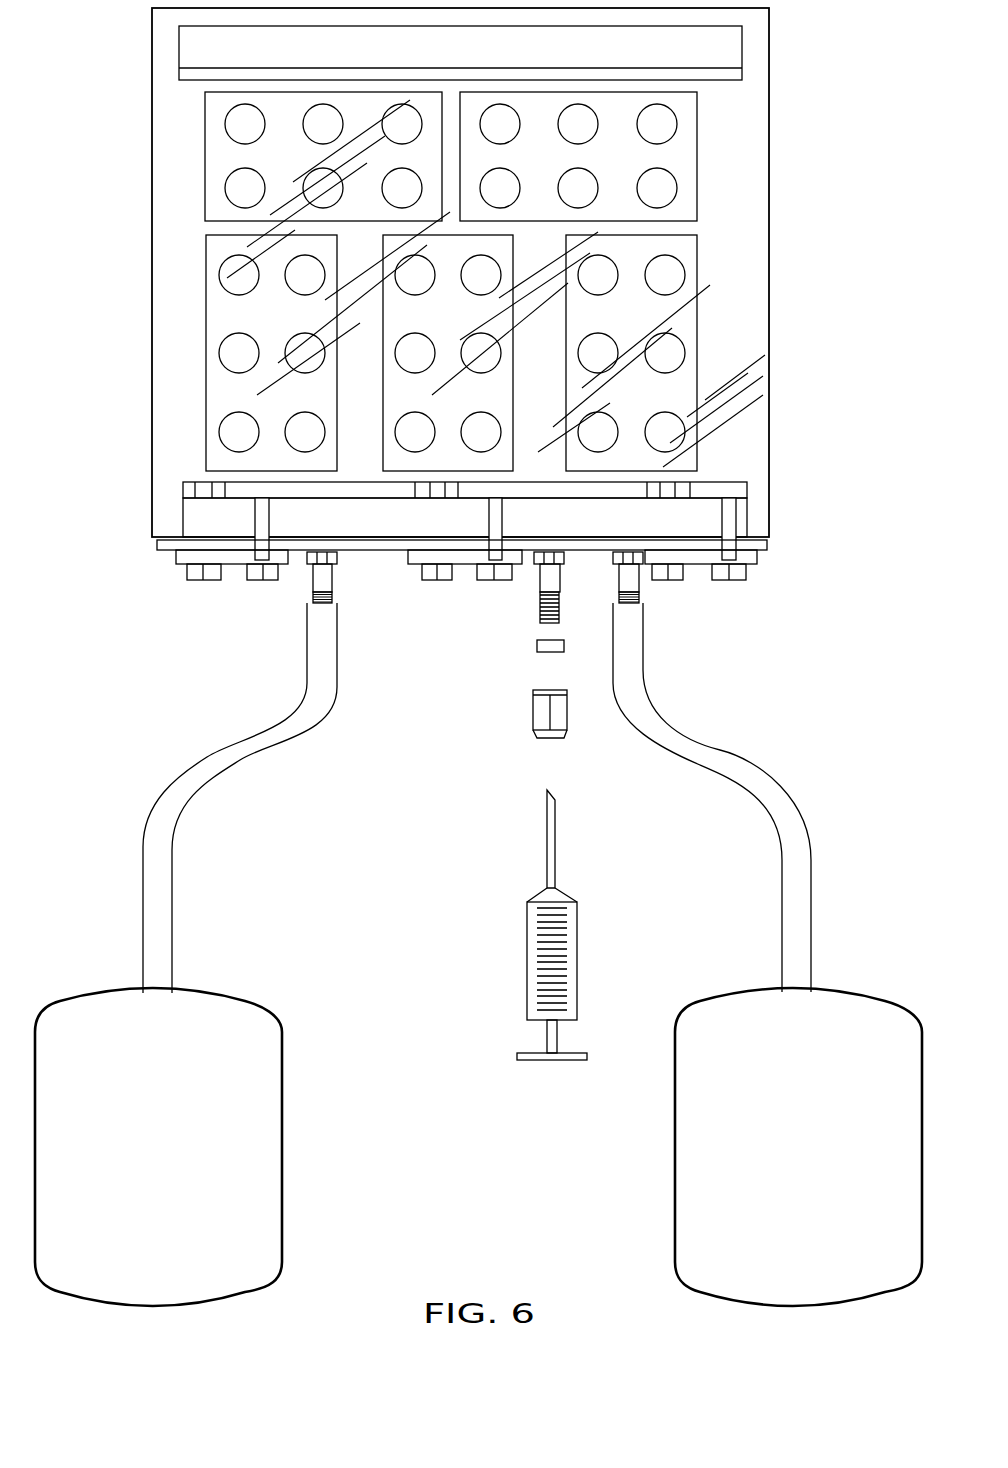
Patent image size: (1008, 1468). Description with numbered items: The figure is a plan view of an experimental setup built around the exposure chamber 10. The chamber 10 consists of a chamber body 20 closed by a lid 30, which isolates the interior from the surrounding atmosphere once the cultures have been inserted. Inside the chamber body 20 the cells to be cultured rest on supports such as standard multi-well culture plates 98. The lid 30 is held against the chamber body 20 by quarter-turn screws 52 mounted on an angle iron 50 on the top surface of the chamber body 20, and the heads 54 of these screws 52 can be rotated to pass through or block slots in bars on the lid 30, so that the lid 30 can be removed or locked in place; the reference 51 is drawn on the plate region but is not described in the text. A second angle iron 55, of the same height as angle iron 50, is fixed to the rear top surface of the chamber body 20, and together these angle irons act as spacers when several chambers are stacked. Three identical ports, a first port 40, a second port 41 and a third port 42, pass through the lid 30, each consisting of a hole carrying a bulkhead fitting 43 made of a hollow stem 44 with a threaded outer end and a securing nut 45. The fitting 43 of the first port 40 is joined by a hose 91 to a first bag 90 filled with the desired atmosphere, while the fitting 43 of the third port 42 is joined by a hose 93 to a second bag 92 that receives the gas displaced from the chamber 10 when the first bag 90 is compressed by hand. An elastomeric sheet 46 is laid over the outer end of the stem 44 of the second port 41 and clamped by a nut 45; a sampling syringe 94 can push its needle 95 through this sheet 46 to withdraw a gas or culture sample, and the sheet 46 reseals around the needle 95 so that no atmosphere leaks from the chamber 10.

The exposure chamber 10 is at (494, 395).
The chamber body 20 is at (768, 163).
The lid 30 is at (768, 542).
The first port 40 is at (345, 579).
The second port 41 is at (578, 591).
The third port 42 is at (660, 593).
The bulkhead fitting 43 is at (500, 686).
The hollow stem 44 is at (313, 585).
The securing nut 45 is at (527, 736).
The elastomeric sheet 46 is at (537, 645).
The angle iron 50 is at (474, 492).
The port 51 is at (207, 492).
The screw 52 is at (238, 522).
The screw head 54 is at (747, 577).
The angle iron 55 is at (742, 50).
The first bag 90 is at (282, 1150).
The hose 91 is at (172, 897).
The second bag 92 is at (864, 988).
The hose 93 is at (793, 787).
The sampling syringe 94 is at (517, 925).
The needle 95 is at (547, 838).
The multi-well culture plate 98 is at (205, 157).